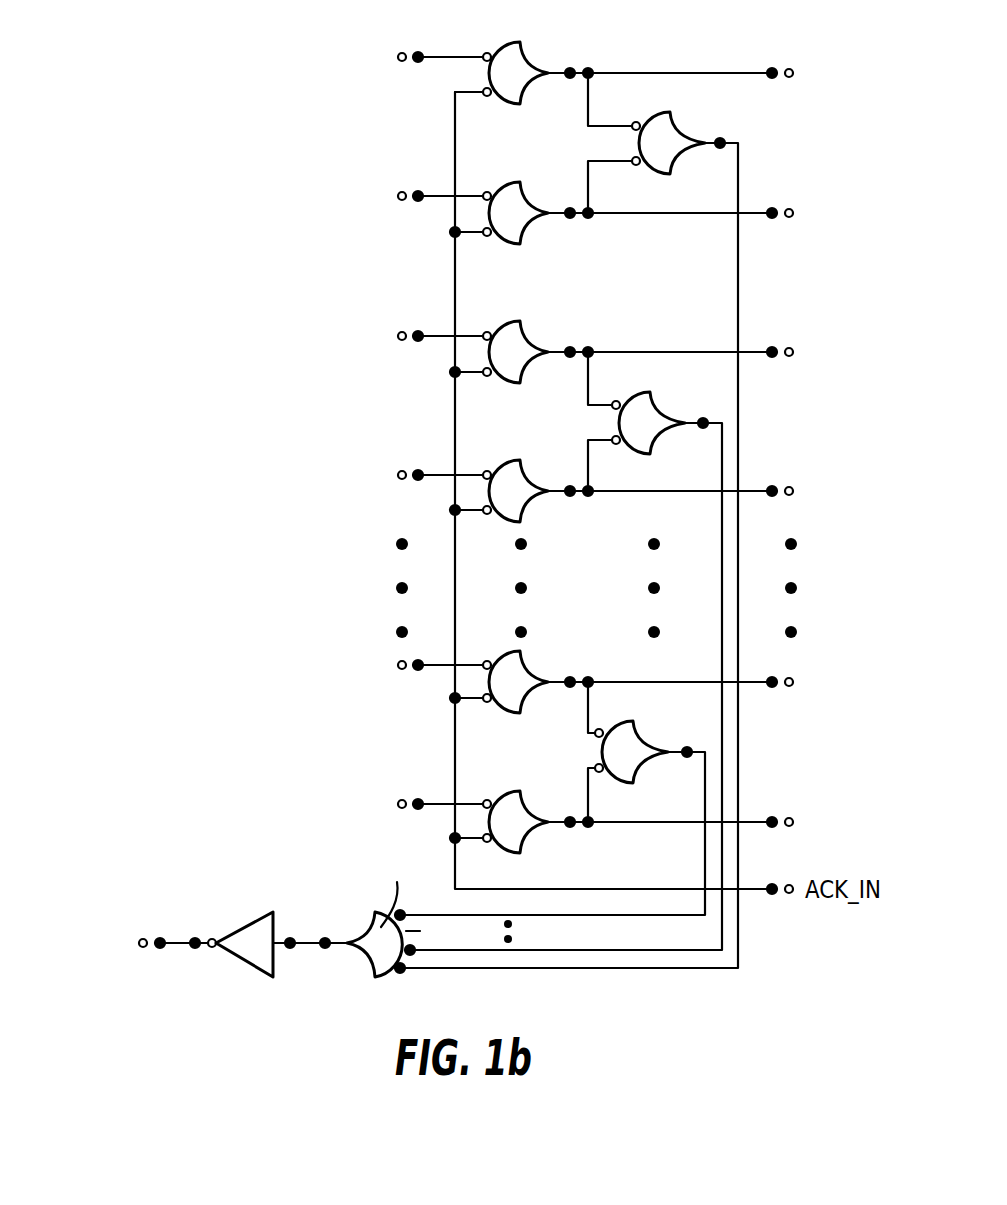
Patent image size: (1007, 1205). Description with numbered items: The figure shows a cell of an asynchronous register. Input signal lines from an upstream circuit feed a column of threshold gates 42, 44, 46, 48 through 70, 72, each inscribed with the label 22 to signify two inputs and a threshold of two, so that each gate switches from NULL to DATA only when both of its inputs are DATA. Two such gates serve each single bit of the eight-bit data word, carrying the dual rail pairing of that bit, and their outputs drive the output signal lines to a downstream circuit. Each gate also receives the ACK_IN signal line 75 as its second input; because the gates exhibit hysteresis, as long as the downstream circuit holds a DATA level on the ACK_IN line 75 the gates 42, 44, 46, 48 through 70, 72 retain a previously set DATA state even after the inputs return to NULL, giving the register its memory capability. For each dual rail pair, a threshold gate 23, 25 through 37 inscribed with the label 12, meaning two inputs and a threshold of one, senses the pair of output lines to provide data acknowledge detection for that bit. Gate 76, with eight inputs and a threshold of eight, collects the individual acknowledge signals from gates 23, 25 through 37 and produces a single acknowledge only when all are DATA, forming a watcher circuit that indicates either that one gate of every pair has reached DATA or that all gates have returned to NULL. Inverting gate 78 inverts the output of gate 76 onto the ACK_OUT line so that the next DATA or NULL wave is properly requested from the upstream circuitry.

The 1 of 2 threshold gate label 12 is at (672, 143).
The 2 of 2 threshold gate label 22 is at (518, 73).
The threshold gate 23 is at (681, 132).
The threshold gate 25 is at (661, 412).
The threshold gate 37 is at (650, 740).
The threshold gate 42 is at (528, 60).
The threshold gate 44 is at (528, 198).
The threshold gate 46 is at (527, 336).
The threshold gate 48 is at (527, 474).
The threshold gate 70 is at (530, 667).
The threshold gate 72 is at (525, 804).
The ACK_IN signal line 75 is at (640, 889).
The threshold gate 76 is at (368, 957).
The inverting gate 78 is at (248, 962).